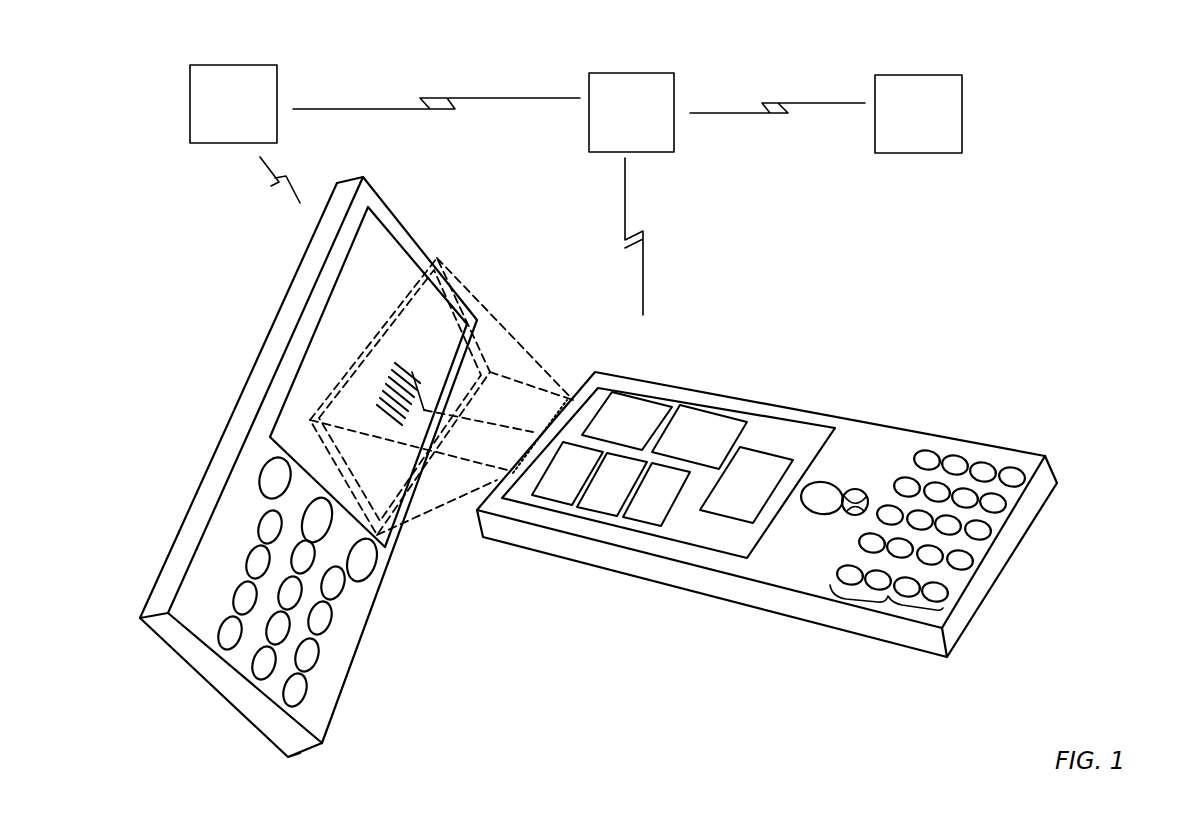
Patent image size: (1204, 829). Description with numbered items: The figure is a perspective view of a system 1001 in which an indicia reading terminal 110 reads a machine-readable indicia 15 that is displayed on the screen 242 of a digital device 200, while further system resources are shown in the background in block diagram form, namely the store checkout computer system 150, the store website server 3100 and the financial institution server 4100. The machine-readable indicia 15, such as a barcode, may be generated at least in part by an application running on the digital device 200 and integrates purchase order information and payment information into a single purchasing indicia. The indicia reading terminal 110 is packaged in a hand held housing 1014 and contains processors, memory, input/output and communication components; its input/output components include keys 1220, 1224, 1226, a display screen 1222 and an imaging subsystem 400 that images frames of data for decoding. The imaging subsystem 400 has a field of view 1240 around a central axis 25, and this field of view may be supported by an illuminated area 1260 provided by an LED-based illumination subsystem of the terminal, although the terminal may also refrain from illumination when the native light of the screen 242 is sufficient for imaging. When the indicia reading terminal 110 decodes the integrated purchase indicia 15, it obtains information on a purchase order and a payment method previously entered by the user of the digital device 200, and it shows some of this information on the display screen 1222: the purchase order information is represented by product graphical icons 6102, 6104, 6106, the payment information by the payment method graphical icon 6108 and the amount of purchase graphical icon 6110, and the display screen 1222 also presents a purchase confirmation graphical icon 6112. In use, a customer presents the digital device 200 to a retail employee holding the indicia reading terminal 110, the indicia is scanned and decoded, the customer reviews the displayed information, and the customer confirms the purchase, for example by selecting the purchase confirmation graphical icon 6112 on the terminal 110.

The system 1001 is at (1078, 103).
The store checkout computer system 150 is at (233, 104).
The store website server 3100 is at (631, 112).
The financial institution server 4100 is at (918, 114).
The digital device 200 is at (308, 467).
The screen 242 is at (323, 286).
The illuminated area 1260 is at (388, 320).
The field of view 1240 is at (398, 303).
The machine-readable indicia 15 is at (412, 372).
The central axis 25 is at (493, 423).
The imaging subsystem 400 is at (572, 401).
The indicia reading terminal 110 is at (1007, 568).
The hand held housing 1014 is at (878, 445).
The display screen 1222 is at (760, 412).
The payment method graphical icon 6108 is at (622, 392).
The amount of purchase graphical icon 6110 is at (700, 408).
The purchase confirmation graphical icon 6112 is at (773, 450).
The product graphical icon 6106 is at (542, 496).
The product graphical icon 6104 is at (597, 511).
The product graphical icon 6102 is at (642, 521).
The key 1220 is at (800, 514).
The key 1224 is at (845, 515).
The key 1226 is at (888, 601).